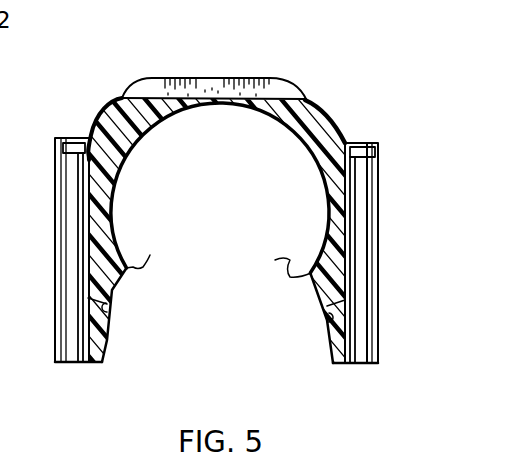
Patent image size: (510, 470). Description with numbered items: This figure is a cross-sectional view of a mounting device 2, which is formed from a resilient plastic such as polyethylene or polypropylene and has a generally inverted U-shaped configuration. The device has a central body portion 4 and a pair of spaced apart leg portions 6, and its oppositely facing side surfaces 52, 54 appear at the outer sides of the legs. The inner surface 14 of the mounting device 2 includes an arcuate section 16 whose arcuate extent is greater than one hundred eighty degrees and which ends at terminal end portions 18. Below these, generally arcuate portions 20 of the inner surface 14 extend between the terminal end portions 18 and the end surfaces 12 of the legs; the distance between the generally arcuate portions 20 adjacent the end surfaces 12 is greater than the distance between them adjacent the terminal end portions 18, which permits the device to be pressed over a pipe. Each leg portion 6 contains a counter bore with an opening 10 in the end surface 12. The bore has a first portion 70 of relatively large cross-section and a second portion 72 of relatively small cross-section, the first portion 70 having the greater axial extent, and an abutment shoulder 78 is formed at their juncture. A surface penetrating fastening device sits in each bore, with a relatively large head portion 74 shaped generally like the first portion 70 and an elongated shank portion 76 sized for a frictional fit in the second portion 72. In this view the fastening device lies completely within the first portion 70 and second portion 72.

The mounting device 2 is at (348, 81).
The central body portion 4 is at (203, 79).
The leg portions 6 is at (100, 150).
The opening 10 is at (73, 362).
The end surfaces 12 is at (57, 358).
The inner surface 14 is at (230, 133).
The arcuate section 16 is at (201, 100).
The terminal end portions 18 is at (218, 252).
The generally arcuate portions 20 is at (108, 307).
The side surface 52 is at (65, 258).
The side surface 54 is at (365, 217).
The first portion 70 is at (62, 175).
The second portion 72 is at (72, 333).
The head portion 74 is at (72, 146).
The shank portion 76 is at (68, 285).
The abutment shoulder 78 is at (60, 300).